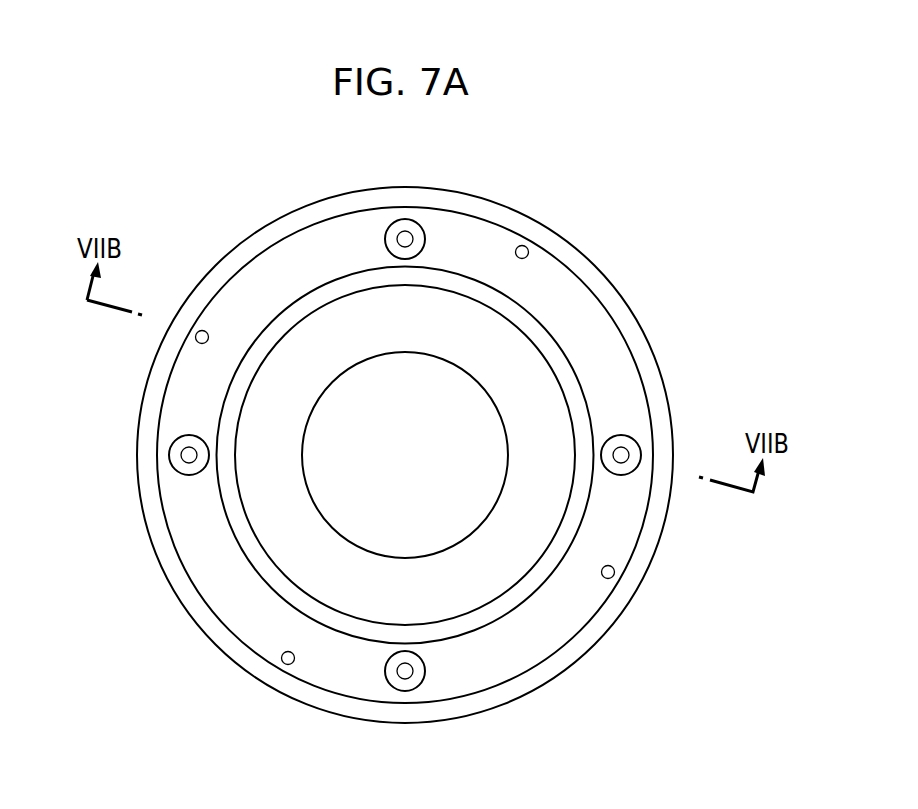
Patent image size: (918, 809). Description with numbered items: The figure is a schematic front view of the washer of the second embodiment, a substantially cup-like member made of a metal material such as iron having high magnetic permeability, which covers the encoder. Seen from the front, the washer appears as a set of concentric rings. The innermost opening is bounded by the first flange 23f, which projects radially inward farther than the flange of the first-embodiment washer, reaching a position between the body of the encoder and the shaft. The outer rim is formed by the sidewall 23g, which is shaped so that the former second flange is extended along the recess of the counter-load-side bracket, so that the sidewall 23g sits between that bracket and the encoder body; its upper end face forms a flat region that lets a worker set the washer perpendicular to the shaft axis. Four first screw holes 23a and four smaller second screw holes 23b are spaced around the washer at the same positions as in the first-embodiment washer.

The first screw holes 23a is at (407, 235).
The second screw holes 23b is at (203, 331).
The first flange 23f is at (333, 545).
The sidewall 23g is at (298, 208).